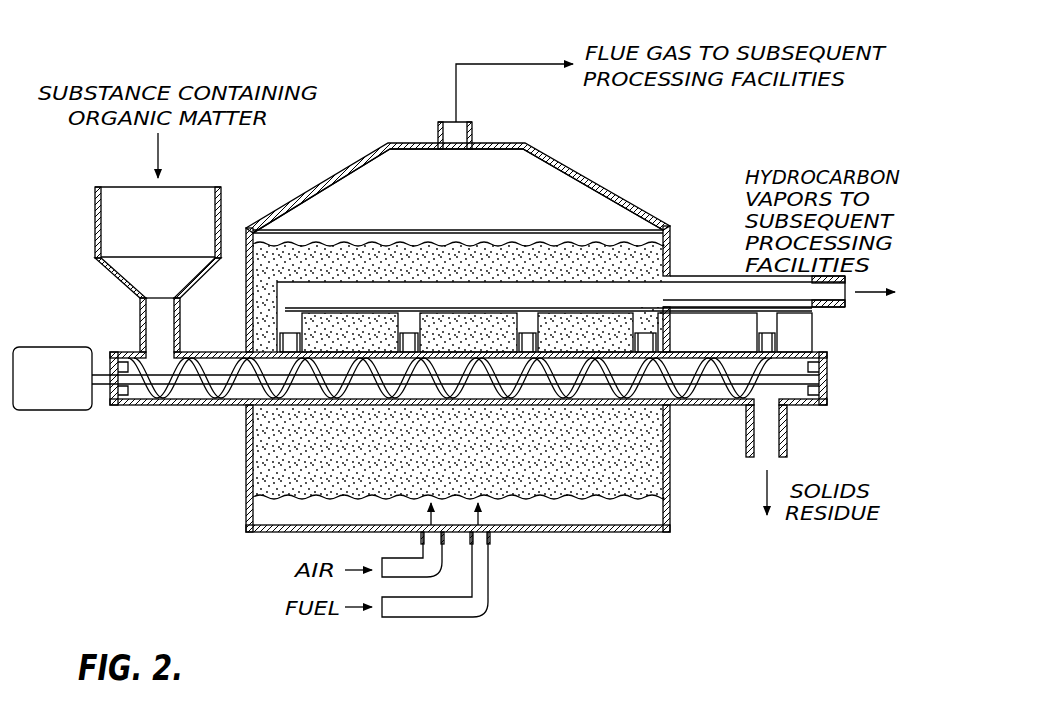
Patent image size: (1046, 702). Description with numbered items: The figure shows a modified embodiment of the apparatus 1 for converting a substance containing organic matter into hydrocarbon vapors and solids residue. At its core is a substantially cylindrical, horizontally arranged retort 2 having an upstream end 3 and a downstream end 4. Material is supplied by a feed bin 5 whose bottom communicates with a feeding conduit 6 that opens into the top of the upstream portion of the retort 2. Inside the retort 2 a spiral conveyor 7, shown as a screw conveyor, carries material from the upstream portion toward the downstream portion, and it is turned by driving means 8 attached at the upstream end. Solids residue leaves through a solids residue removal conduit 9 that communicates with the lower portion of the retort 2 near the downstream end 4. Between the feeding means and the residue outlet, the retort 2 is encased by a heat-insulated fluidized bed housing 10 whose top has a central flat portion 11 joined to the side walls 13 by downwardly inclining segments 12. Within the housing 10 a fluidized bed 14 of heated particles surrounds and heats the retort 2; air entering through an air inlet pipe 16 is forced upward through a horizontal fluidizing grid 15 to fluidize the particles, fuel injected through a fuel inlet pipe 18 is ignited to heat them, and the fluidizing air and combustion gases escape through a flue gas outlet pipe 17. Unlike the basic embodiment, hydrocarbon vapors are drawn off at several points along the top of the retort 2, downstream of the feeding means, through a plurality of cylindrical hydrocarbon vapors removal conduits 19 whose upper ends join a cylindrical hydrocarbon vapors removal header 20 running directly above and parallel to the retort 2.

The apparatus 1 is at (612, 185).
The retort 2 is at (200, 405).
The upstream end 3 is at (112, 405).
The downstream end 4 is at (828, 388).
The feed bin 5 is at (95, 238).
The feeding conduit 6 is at (140, 322).
The spiral conveyor 7 is at (705, 398).
The driving means 8 is at (60, 412).
The solids residue removal conduit 9 is at (788, 425).
The fluidized bed housing 10 is at (672, 230).
The flat portion 11 is at (500, 147).
The downwardly inclining segments 12 is at (330, 185).
The side walls 13 is at (246, 320).
The fluidized bed 14 is at (640, 258).
The fluidizing grid 15 is at (253, 498).
The air inlet pipe 16 is at (408, 560).
The flue gas outlet pipe 17 is at (438, 135).
The fuel inlet pipe 18 is at (424, 617).
The hydrocarbon vapors removal conduits 19 is at (306, 322).
The hydrocarbon vapors removal header 20 is at (838, 308).